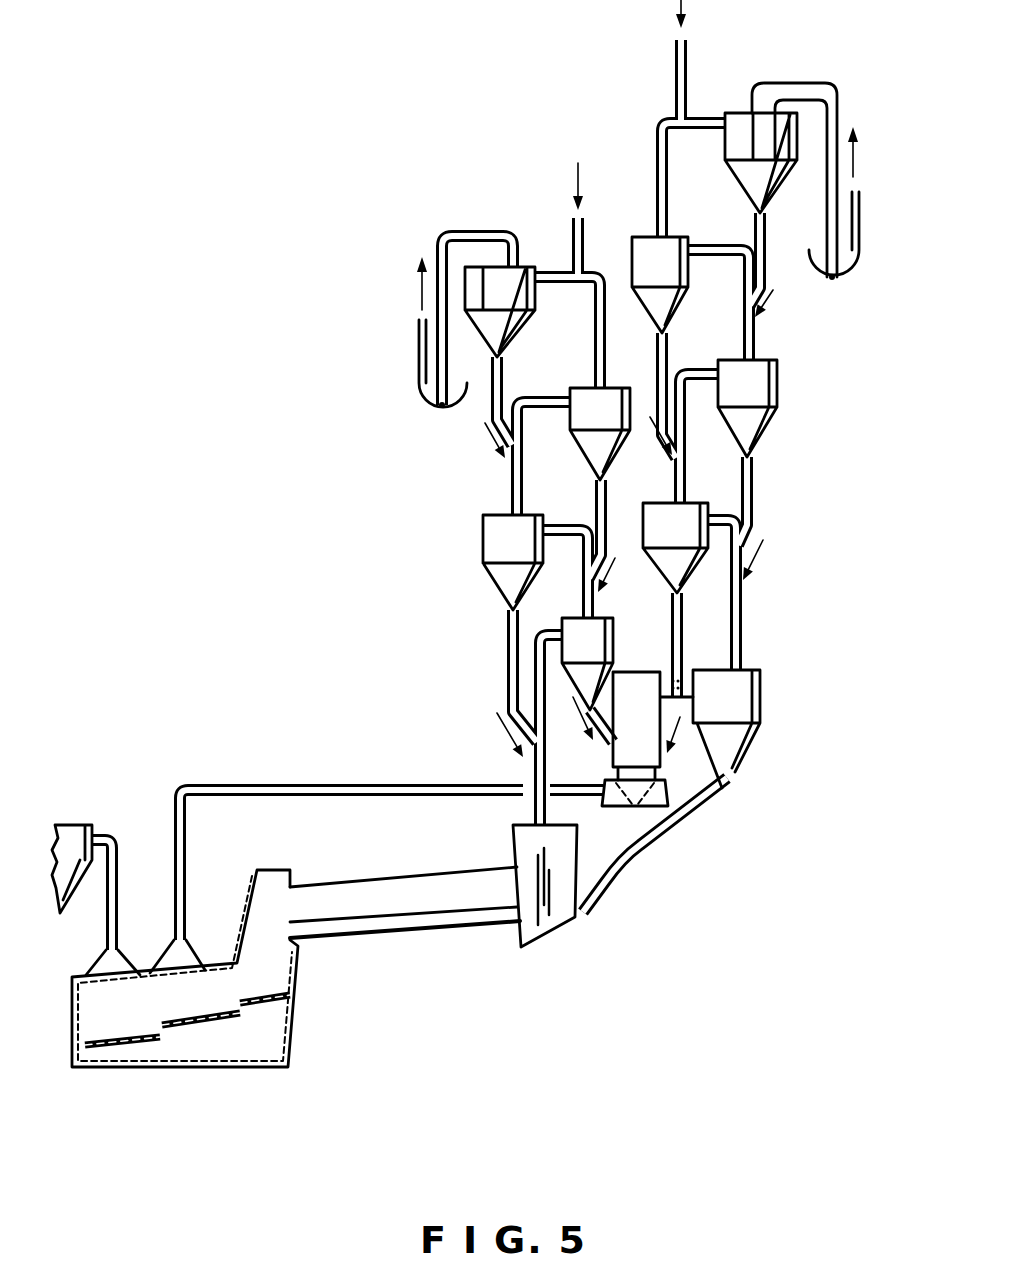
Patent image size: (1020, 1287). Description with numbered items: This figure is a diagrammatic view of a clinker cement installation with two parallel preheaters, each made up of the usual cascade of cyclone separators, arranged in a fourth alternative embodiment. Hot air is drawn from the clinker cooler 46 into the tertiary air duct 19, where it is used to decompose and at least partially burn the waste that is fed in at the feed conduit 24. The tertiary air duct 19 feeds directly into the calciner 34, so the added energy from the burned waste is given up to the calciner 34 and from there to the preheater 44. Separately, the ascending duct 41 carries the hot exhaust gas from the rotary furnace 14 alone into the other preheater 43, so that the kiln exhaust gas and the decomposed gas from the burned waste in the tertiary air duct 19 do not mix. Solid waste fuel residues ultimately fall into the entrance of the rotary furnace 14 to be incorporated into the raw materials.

The rotary furnace 14 is at (397, 877).
The tertiary air duct 19 is at (282, 787).
The feed conduit 24 is at (567, 770).
The calciner 34 is at (665, 768).
The exhaust gas duct 41 is at (528, 808).
The preheater 43 is at (415, 207).
The preheater 44 is at (850, 48).
The clinker cooler 46 is at (203, 1068).